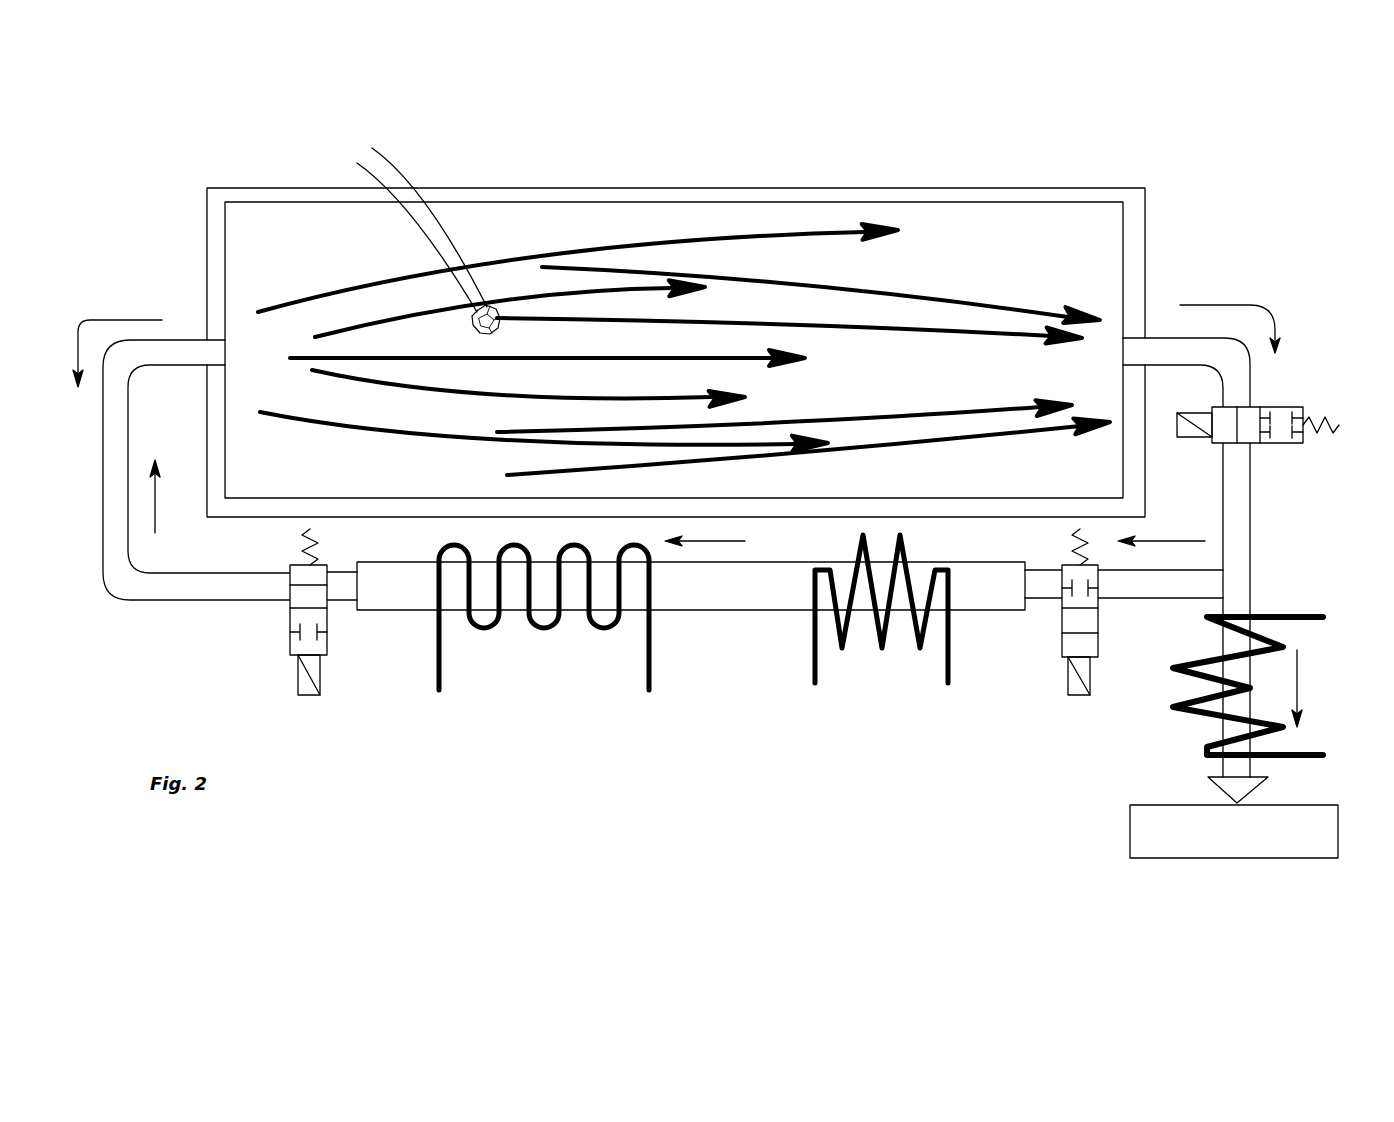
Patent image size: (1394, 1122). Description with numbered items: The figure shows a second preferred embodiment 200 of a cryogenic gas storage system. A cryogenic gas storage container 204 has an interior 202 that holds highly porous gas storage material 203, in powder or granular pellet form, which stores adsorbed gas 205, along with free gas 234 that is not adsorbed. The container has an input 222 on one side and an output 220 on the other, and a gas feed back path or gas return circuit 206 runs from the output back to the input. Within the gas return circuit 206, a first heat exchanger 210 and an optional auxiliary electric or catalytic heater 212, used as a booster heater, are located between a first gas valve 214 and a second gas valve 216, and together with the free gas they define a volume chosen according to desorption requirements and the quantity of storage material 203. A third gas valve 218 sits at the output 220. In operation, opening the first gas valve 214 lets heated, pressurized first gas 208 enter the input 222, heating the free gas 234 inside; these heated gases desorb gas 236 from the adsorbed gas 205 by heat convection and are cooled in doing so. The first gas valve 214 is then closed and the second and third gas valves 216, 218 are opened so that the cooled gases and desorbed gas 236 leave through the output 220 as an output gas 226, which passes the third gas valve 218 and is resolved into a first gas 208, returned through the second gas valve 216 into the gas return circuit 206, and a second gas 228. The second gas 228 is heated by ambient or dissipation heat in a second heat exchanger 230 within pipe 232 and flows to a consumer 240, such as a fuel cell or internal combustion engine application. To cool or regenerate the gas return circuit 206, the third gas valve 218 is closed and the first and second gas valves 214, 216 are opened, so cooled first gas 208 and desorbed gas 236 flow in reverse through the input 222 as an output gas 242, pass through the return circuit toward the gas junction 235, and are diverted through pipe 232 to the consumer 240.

The second preferred embodiment 200 is at (485, 118).
The interior 202 is at (470, 218).
The highly porous gas storage material 203 is at (410, 219).
The cryogenic gas storage container 204 is at (278, 187).
The adsorbed gas 205 is at (410, 244).
The gas return circuit 206 is at (193, 617).
The first gas 208 is at (155, 530).
The first heat exchanger 210 is at (818, 683).
The heater 212 is at (440, 652).
The first gas valve 214 is at (290, 622).
The second gas valve 216 is at (1062, 635).
The third gas valve 218 is at (1273, 405).
The output 220 is at (1128, 338).
The input 222 is at (210, 338).
The output gas 226 is at (1245, 305).
The second gas 228 is at (1300, 685).
The second heat exchanger 230 is at (1318, 757).
The pipe 232 is at (1223, 760).
The free gas 234 is at (418, 355).
The gas junction 235 is at (1235, 585).
The desorbed gas 236 is at (988, 333).
The consumer 240 is at (1130, 826).
The output gas 242 is at (112, 318).